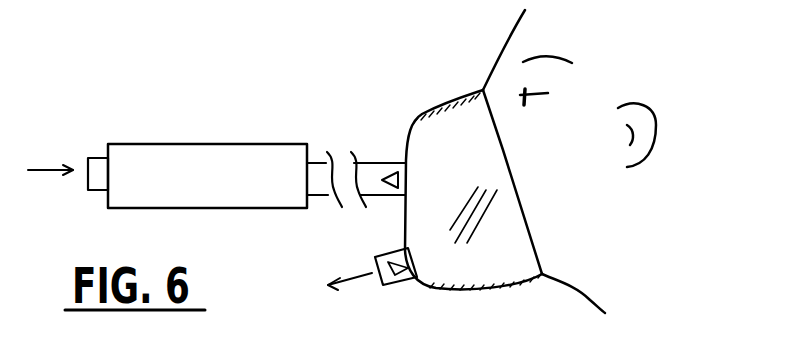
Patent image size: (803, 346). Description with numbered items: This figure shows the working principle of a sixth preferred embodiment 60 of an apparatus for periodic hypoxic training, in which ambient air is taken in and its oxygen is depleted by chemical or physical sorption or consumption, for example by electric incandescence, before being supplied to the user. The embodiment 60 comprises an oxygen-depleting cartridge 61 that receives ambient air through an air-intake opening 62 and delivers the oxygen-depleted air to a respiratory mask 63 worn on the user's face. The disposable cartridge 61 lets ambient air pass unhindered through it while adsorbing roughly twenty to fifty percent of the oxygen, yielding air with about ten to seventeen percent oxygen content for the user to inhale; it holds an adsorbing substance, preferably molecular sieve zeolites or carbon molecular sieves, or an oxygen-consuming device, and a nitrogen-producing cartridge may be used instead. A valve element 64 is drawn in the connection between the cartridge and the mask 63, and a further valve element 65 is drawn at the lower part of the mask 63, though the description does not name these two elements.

The embodiment 60 is at (322, 103).
The oxygen-depleting cartridge 61 is at (208, 168).
The air-intake opening 62 is at (100, 168).
The respiratory mask 63 is at (450, 133).
The one-way inlet valve 64 is at (386, 172).
The exhalation valve 65 is at (412, 282).